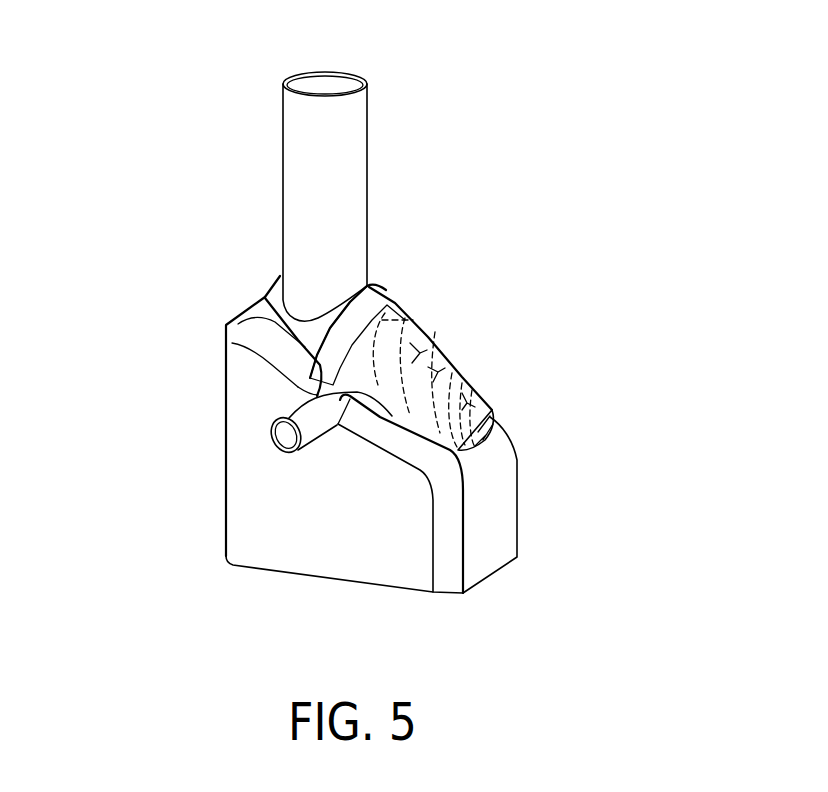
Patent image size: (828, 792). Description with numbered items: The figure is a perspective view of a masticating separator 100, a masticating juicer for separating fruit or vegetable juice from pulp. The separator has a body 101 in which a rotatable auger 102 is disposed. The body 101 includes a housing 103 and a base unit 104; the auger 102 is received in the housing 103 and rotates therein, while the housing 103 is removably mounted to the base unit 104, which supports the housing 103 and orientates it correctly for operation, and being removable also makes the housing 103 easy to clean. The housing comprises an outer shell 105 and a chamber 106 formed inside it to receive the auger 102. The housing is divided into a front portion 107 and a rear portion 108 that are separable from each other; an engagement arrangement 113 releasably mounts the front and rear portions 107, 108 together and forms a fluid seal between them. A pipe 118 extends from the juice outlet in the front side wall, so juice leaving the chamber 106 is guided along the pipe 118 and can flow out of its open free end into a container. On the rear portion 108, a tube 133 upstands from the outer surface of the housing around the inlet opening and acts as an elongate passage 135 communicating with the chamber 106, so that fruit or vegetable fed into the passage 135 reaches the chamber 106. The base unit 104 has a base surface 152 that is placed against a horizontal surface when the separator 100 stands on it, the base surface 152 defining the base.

The masticating separator 100 is at (556, 150).
The body 101 is at (245, 328).
The rotatable auger 102 is at (417, 370).
The housing 103 is at (460, 377).
The base unit 104 is at (265, 498).
The outer shell 105 is at (397, 337).
The chamber 106 is at (407, 360).
The front portion 107 is at (447, 363).
The rear portion 108 is at (278, 288).
The engagement arrangement 113 is at (380, 288).
The pipe 118 is at (285, 408).
The tube 133 is at (345, 157).
The passage 135 is at (330, 83).
The base surface 152 is at (340, 579).